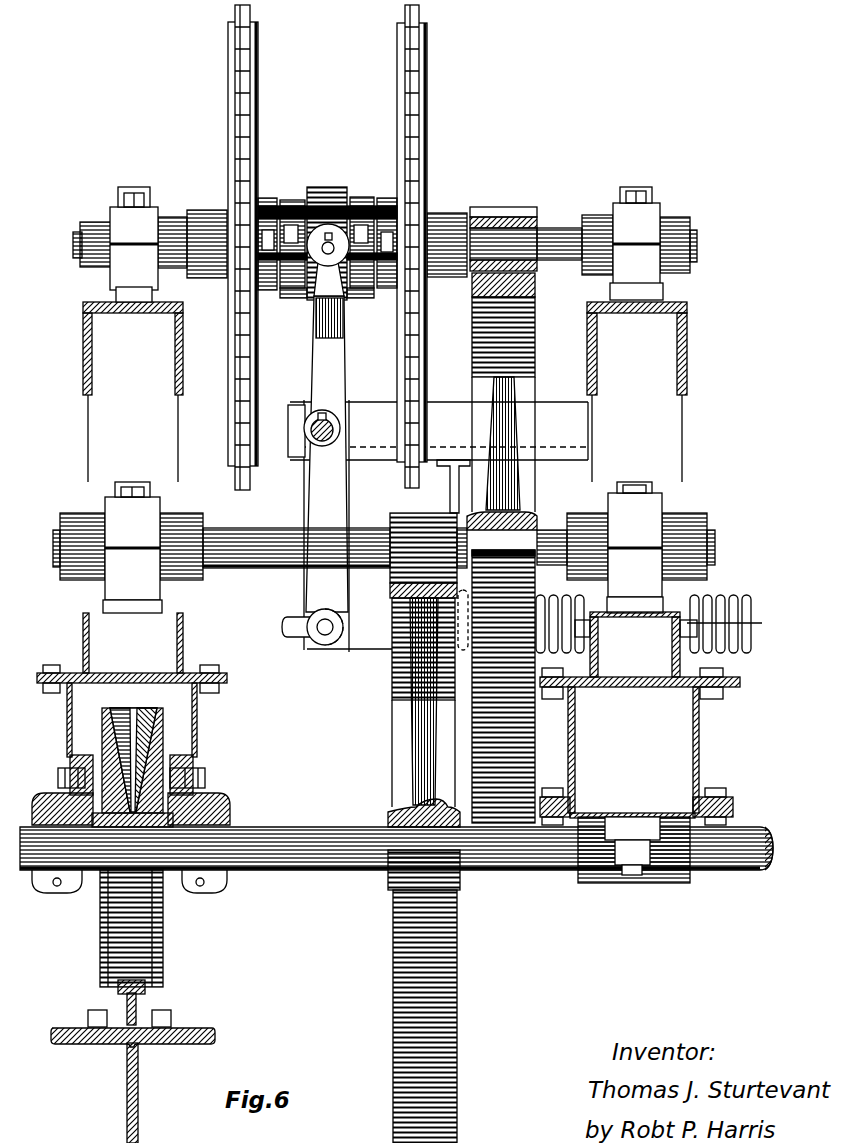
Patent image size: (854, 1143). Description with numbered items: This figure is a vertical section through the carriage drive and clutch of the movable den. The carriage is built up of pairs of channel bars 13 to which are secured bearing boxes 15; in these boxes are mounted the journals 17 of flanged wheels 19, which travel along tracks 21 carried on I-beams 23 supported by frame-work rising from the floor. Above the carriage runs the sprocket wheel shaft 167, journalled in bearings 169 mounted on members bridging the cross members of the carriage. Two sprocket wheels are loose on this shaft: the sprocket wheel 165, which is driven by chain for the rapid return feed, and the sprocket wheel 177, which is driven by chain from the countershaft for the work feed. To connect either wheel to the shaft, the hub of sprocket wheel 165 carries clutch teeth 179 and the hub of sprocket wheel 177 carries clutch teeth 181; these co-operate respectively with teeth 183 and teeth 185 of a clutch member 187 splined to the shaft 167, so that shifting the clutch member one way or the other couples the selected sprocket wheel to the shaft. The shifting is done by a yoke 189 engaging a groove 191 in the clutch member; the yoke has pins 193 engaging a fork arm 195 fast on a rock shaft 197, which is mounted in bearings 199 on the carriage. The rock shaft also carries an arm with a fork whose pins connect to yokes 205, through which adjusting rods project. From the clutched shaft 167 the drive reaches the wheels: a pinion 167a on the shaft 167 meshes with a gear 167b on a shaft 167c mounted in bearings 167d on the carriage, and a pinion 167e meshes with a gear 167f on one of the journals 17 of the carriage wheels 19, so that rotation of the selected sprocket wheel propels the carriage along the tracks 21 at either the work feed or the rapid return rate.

The sprocket wheel 165 is at (230, 97).
The sprocket wheel 177 is at (425, 97).
The bearings 169 is at (128, 215).
The clutch teeth 179 is at (267, 200).
The teeth 183 is at (296, 201).
The clutch member 187 is at (303, 292).
The groove 191 is at (326, 205).
The yoke 189 is at (333, 224).
The teeth 185 is at (362, 200).
The clutch teeth 181 is at (385, 200).
The pins 193 is at (346, 298).
The fork arm 195 is at (342, 361).
The rock shaft 197 is at (333, 431).
The bearings 199 is at (303, 512).
The pinion 167a is at (485, 213).
The shaft 167 is at (562, 228).
The gear 167b is at (530, 357).
The shaft 167c is at (240, 565).
The bearings 167d is at (700, 500).
The pinion 167e is at (404, 515).
The gear 167f is at (392, 702).
The yokes 205 is at (360, 640).
The channel bars 13 is at (65, 728).
The flanged wheels 19 is at (160, 745).
The bearing boxes 15 is at (50, 805).
The journals 17 is at (275, 830).
The tracks 21 is at (140, 1012).
The I-beams 23 is at (138, 1090).